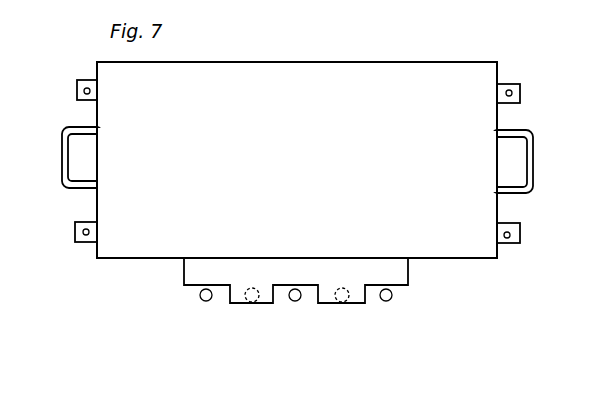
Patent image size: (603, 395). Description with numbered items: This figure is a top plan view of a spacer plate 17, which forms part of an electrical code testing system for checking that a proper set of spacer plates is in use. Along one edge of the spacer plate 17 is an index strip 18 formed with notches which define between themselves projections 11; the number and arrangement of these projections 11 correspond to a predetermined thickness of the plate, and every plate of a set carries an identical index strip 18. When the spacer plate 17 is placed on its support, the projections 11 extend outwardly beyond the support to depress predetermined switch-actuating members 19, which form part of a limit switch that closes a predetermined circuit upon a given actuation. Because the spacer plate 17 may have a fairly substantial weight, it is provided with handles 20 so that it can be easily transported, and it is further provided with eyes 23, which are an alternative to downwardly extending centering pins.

The spacer plate 17 is at (140, 245).
The eyes 23 is at (517, 84).
The handles 20 is at (533, 155).
The index strip 18 is at (408, 285).
The switch-actuating members 19 is at (295, 301).
The projections 11 is at (238, 290).